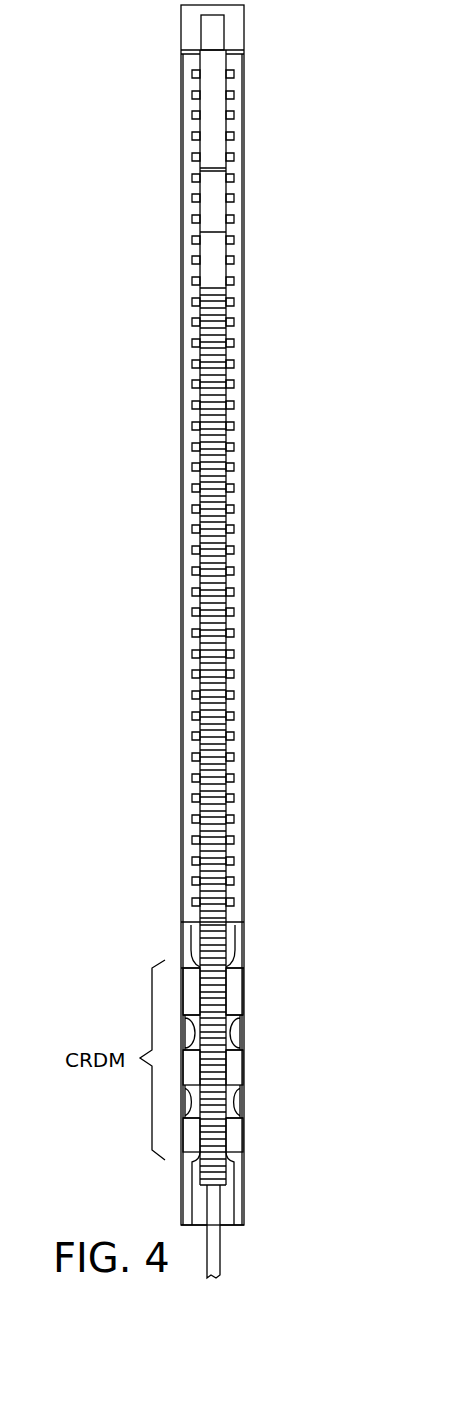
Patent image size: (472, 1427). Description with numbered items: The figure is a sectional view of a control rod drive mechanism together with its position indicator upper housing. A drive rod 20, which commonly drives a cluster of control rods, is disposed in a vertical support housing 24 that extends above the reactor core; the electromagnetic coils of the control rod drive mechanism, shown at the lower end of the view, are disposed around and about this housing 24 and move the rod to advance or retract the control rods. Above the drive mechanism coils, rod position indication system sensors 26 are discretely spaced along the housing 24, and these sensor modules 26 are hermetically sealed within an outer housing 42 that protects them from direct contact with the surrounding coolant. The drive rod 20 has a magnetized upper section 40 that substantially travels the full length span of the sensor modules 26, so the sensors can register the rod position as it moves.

The magnetized upper section 40 is at (213, 138).
The rod position indication system sensors 26 is at (191, 283).
The outer housing 42 is at (245, 352).
The vertical support housing 24 is at (185, 931).
The drive rod 20 is at (216, 1242).